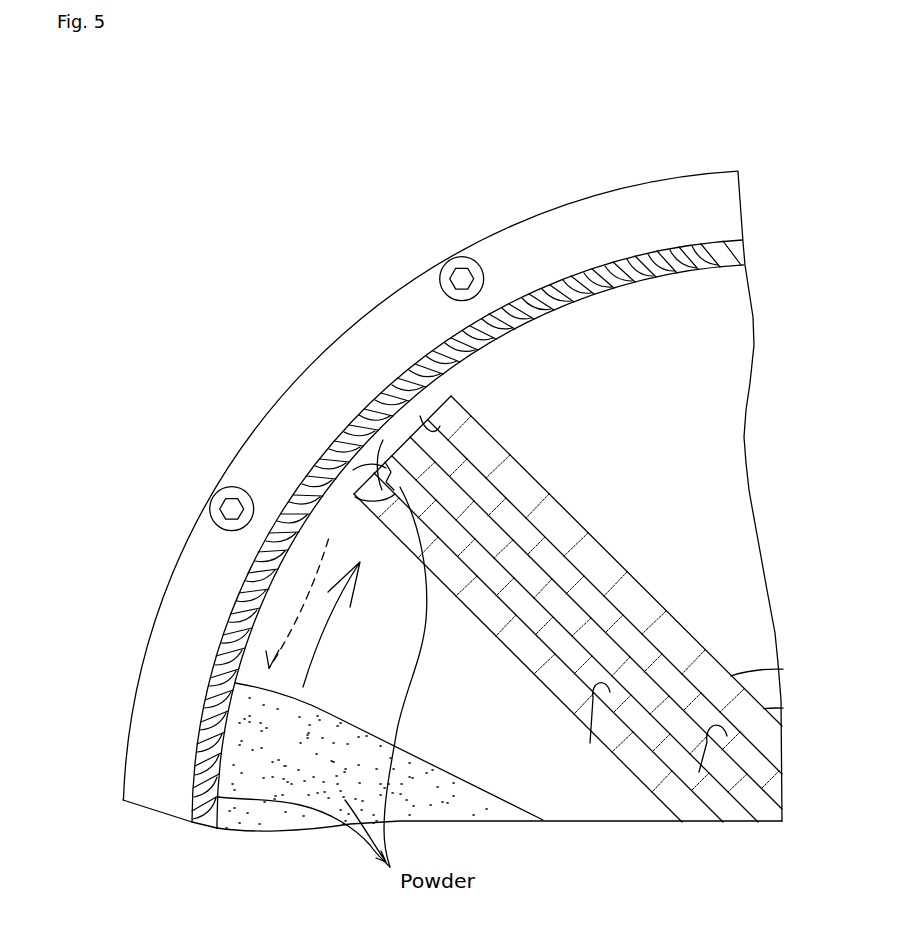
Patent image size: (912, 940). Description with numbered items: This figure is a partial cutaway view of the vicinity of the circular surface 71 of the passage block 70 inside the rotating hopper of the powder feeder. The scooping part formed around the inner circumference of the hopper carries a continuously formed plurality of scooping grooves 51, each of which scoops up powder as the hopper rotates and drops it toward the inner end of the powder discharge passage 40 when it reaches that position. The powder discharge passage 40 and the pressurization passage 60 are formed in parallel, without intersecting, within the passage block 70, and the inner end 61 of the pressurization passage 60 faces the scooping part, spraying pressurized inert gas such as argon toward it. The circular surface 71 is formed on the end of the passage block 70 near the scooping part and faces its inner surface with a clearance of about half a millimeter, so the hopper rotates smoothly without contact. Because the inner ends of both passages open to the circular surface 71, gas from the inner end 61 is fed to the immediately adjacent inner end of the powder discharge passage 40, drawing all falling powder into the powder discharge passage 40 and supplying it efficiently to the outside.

The powder discharge passage 40 is at (610, 692).
The scooping groove 51 is at (647, 270).
The pressurization passage 60 is at (727, 736).
The inner end 61 is at (392, 440).
The passage block 70 is at (671, 589).
The circular surface 71 is at (408, 432).